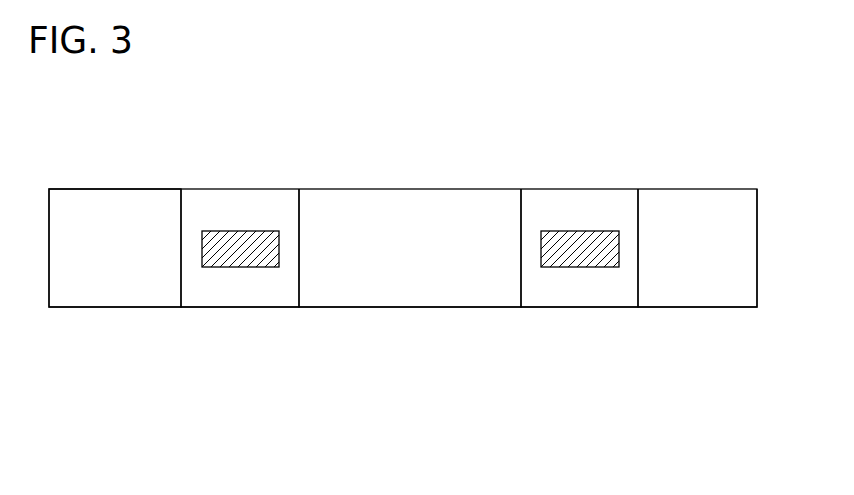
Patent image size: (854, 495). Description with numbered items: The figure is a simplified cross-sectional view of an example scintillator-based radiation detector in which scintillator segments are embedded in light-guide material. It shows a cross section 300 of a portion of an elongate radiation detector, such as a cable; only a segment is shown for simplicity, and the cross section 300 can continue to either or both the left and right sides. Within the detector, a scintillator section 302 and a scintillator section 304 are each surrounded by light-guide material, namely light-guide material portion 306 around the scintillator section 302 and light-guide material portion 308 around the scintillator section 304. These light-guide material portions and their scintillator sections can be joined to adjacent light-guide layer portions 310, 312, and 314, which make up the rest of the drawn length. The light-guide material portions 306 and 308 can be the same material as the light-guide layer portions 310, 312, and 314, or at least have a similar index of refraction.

The cross section 300 is at (671, 89).
The scintillator section 302 is at (241, 232).
The scintillator section 304 is at (555, 232).
The light-guide material portion 306 is at (240, 308).
The light-guide material portion 308 is at (579, 308).
The light-guide layer portion 310 is at (122, 308).
The light-guide layer portion 312 is at (402, 308).
The light-guide layer portion 314 is at (699, 308).